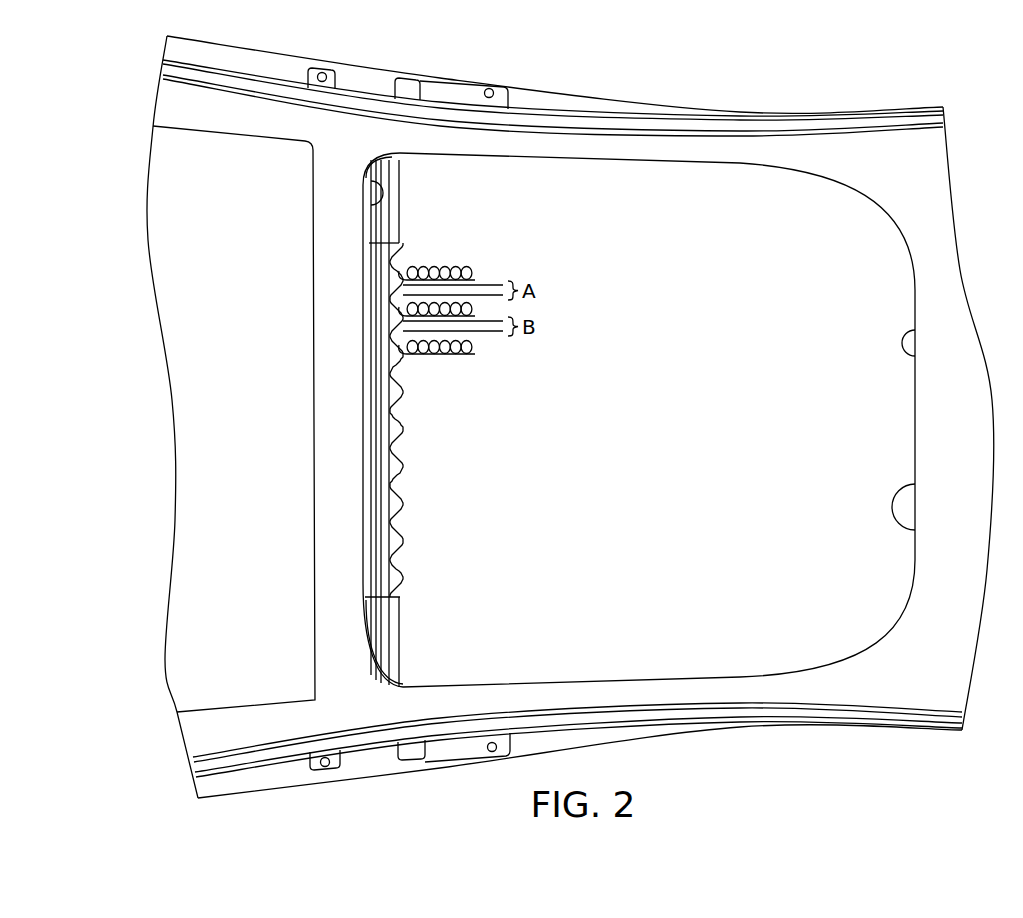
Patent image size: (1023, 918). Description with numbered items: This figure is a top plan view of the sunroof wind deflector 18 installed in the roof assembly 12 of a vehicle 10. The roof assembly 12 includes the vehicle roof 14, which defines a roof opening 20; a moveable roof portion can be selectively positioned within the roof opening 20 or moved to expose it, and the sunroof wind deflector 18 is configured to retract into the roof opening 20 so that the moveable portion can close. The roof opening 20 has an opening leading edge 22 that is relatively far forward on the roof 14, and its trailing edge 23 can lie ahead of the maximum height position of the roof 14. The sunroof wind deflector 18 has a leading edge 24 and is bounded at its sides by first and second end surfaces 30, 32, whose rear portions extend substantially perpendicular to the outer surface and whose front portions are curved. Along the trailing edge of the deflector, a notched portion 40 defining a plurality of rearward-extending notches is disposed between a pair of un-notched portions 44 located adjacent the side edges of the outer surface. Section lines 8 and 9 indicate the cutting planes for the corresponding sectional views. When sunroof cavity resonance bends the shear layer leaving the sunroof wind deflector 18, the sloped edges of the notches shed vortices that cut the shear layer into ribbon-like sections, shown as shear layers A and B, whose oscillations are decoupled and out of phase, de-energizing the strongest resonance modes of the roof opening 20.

The vehicle 10 is at (950, 207).
The roof assembly 12 is at (780, 90).
The roof 14 is at (898, 153).
The sunroof wind deflector 18 is at (402, 550).
The roof opening 20 is at (915, 530).
The opening leading edge 22 is at (378, 183).
The trailing edge of the roof opening 23 is at (915, 357).
The leading edge 24 is at (363, 285).
The first end surface 30 is at (380, 673).
The second end surface 32 is at (385, 162).
The notched portion 40 is at (400, 580).
The un-notched portions 44 is at (388, 218).
The section line 8- 8 is at (350, 402).
The section line 9- 9 is at (350, 420).